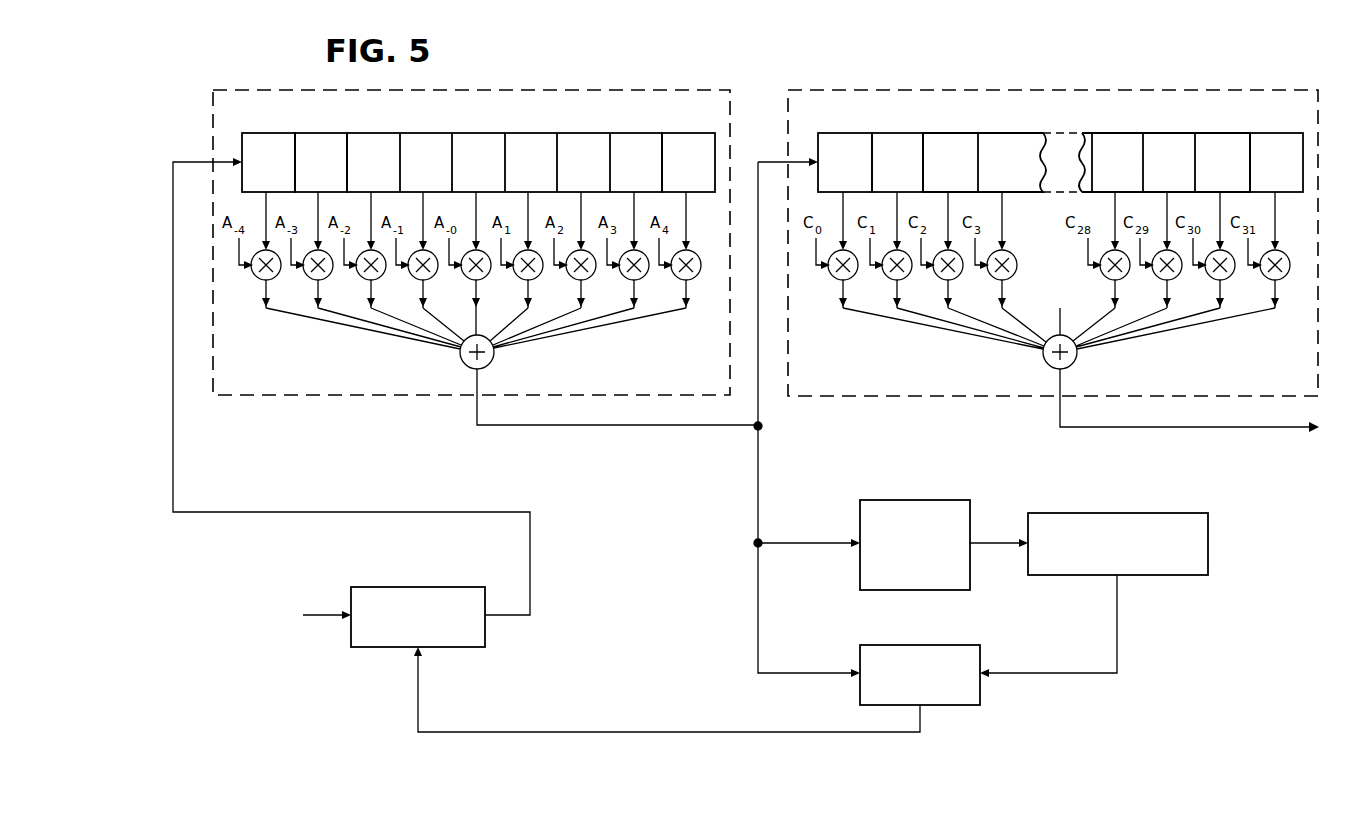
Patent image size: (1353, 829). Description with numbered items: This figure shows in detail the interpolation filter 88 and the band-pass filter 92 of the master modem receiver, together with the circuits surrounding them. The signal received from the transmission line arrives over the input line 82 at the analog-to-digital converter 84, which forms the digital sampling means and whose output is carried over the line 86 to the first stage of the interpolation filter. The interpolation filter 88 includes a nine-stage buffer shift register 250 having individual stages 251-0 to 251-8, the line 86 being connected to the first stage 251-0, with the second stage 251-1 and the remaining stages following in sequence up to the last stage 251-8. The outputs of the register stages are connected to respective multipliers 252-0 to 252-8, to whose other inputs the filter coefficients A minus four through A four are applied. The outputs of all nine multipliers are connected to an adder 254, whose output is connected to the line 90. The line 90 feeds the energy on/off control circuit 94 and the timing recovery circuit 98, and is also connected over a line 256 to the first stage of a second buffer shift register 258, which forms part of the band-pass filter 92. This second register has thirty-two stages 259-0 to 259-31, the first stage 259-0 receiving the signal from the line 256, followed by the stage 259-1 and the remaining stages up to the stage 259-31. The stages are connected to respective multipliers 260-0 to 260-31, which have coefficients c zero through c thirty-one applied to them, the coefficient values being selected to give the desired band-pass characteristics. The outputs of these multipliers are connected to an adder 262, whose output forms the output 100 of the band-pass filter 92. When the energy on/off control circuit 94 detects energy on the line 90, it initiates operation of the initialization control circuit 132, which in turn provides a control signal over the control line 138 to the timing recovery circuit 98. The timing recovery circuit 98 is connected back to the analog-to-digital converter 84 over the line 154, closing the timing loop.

The interpolation filter 88 is at (560, 90).
The band-pass filter 92 is at (1130, 90).
The buffer shift register 250 is at (471, 148).
The buffer shift register stage 251-0 is at (280, 112).
The buffer shift register stage 251-1 is at (325, 143).
The buffer shift register stage 251-8 is at (688, 143).
The multiplier 252-0 is at (251, 281).
The multiplier 252-8 is at (686, 281).
The adder 254 is at (463, 364).
The line 90 is at (645, 430).
The second buffer shift register 258 is at (1053, 148).
The buffer register stage 259-0 is at (856, 112).
The buffer register stage 259-1 is at (894, 143).
The buffer register stage 259-31 is at (1273, 143).
The multiplier 260-0 is at (831, 281).
The multiplier 260-31 is at (1270, 281).
The adder 262 is at (1074, 364).
The output line 100 is at (1298, 429).
The line 256 is at (760, 405).
The line 86 is at (342, 511).
The analog-to-digital converter 84 is at (436, 586).
The input line 82 is at (324, 614).
The line 154 is at (418, 697).
The energy on/off control circuit 94 is at (917, 500).
The initialization control circuit 132 is at (1095, 513).
The timing recovery circuit 98 is at (980, 646).
The control line 138 is at (1119, 643).